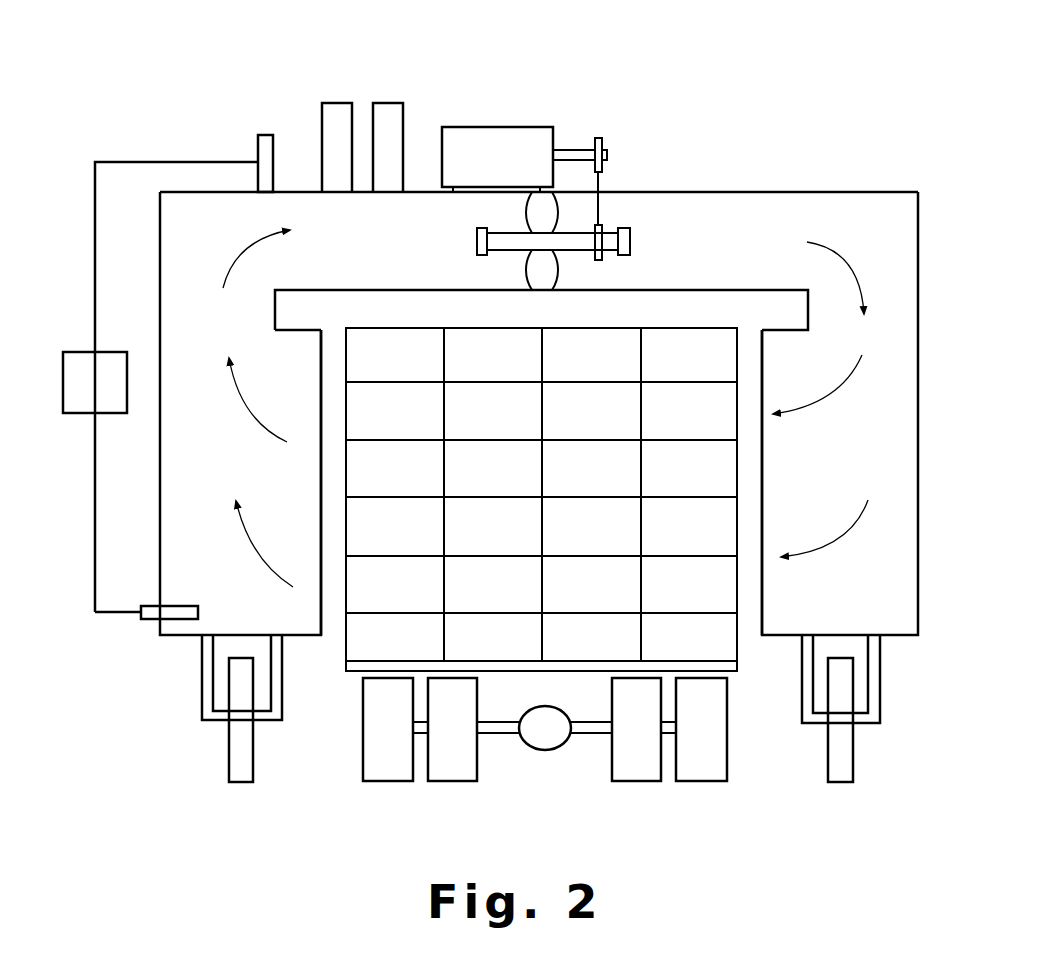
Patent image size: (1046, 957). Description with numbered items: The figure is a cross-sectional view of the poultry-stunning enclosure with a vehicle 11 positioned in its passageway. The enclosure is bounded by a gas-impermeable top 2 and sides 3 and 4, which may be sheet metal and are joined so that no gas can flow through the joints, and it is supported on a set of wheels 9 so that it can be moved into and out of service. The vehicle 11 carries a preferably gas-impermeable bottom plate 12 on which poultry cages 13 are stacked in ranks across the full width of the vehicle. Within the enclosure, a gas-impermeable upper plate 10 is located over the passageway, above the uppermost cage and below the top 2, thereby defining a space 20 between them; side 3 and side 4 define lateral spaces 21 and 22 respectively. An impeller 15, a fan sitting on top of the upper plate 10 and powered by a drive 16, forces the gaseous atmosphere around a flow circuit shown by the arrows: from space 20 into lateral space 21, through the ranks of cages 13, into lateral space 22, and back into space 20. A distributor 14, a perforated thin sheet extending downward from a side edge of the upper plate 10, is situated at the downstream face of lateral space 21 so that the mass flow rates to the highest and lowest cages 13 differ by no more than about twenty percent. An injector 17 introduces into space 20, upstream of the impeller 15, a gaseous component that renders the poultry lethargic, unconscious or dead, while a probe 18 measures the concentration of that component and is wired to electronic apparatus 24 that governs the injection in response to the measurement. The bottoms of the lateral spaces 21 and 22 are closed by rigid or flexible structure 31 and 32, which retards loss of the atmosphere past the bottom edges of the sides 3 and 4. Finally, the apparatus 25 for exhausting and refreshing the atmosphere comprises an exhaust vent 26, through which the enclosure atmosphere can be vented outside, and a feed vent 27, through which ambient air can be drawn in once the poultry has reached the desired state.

The top 2 is at (745, 192).
The side 3 is at (920, 212).
The side 4 is at (160, 310).
The wheels 9 is at (228, 747).
The upper plate 10 is at (541, 310).
The vehicle 11 is at (540, 755).
The bottom plate 12 is at (578, 665).
The cages 13 is at (541, 494).
The distributor 14 is at (322, 578).
The impeller 15 is at (557, 217).
The drive 16 is at (503, 127).
The injector 17 is at (254, 150).
The probe 18 is at (153, 606).
The space 20 is at (543, 272).
The lateral space 21 is at (839, 452).
The lateral space 22 is at (236, 461).
The electronic apparatus 24 is at (95, 382).
The apparatus for exhausting atmosphere and feeding ambient air 25 is at (362, 93).
The exhaust vent 26 is at (322, 150).
The feed vent 27 is at (403, 138).
The structure 31 is at (893, 640).
The structure 32 is at (182, 637).